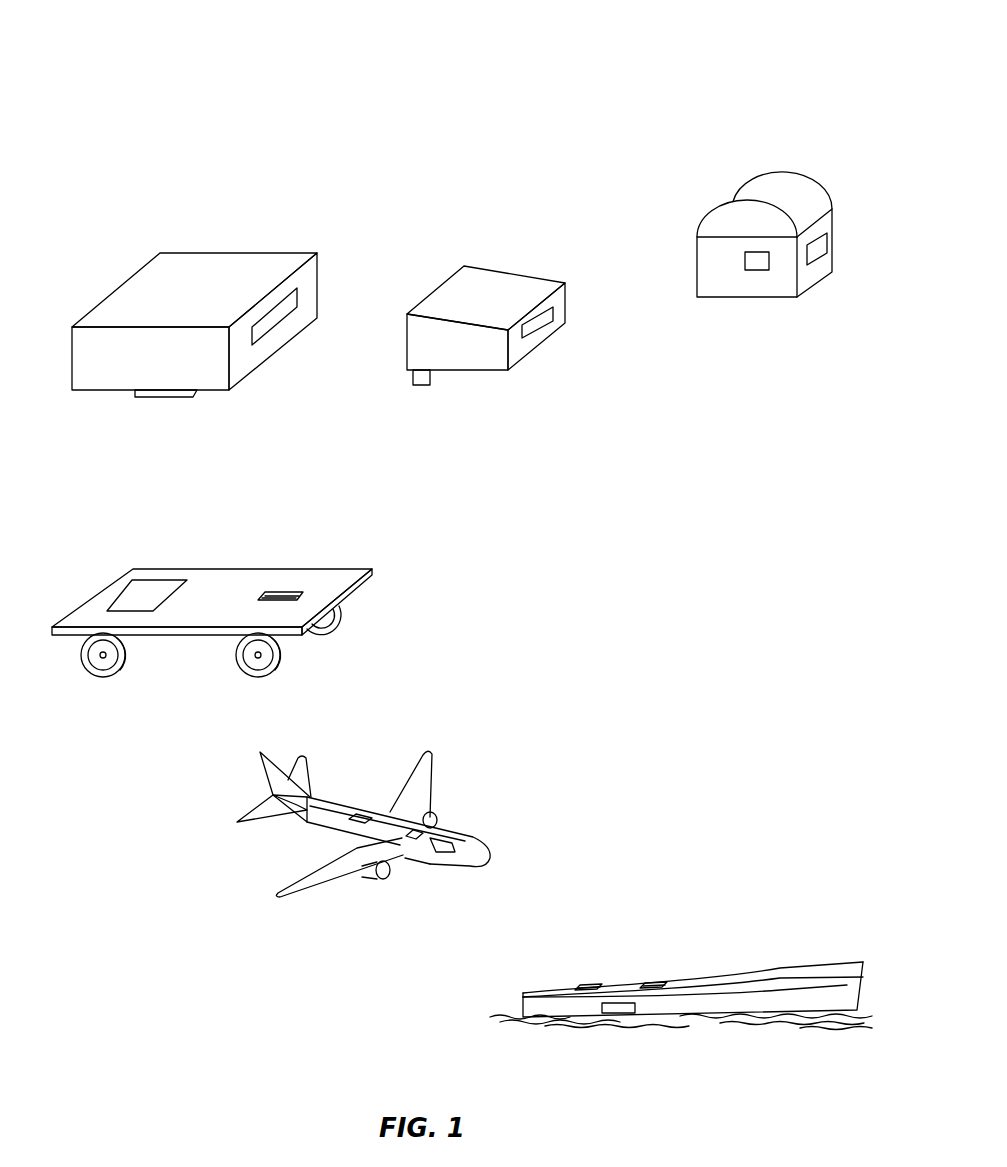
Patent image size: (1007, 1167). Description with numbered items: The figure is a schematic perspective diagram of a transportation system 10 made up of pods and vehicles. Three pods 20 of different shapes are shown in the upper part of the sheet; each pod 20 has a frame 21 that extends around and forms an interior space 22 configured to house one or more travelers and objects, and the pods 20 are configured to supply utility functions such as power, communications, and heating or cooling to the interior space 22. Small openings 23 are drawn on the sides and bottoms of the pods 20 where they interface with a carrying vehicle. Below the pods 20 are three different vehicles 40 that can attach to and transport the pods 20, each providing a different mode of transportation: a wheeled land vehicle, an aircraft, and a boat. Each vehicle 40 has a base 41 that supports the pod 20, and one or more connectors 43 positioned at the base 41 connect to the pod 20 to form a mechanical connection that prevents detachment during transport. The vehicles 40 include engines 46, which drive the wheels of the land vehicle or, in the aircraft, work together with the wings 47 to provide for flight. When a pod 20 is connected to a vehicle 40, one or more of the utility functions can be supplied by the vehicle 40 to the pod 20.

The transportation system 10 is at (208, 96).
The pod 20 is at (101, 274).
The frame 21 is at (70, 357).
The interior space 22 is at (236, 270).
The container interface port 23 is at (272, 318).
The vehicle 40 is at (68, 581).
The base 41 is at (226, 613).
The connector 43 is at (289, 592).
The engine 46 is at (143, 592).
The wing 47 is at (412, 779).